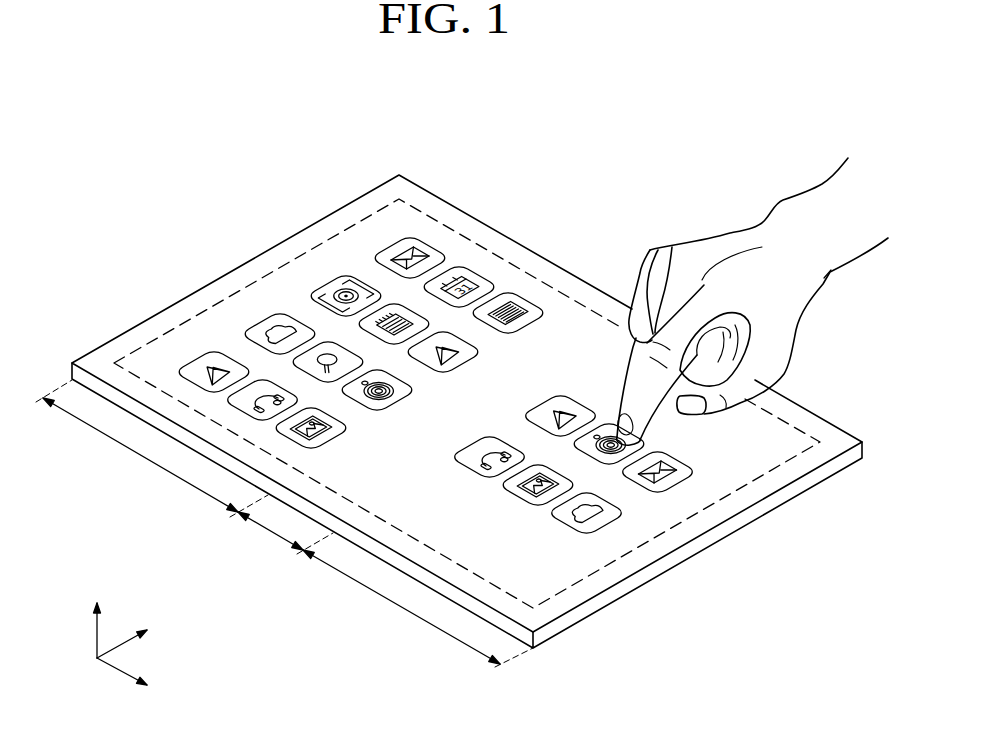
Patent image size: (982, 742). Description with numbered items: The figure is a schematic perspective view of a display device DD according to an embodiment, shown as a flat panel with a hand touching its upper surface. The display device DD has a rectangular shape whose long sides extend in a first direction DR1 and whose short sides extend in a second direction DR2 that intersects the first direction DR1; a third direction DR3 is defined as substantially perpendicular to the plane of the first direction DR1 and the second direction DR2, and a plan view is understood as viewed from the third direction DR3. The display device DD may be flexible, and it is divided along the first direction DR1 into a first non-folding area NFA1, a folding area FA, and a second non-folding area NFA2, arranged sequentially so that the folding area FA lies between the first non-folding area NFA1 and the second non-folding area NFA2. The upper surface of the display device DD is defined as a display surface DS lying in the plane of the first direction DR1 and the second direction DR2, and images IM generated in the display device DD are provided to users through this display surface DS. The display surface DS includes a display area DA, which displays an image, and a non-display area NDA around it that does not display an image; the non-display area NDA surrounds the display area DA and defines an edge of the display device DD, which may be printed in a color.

The display device DD is at (467, 362).
The display surface DS is at (467, 403).
The display area DA is at (568, 333).
The non-display area NDA is at (553, 272).
The image IM is at (327, 288).
The first non-folding area NFA1 is at (137, 446).
The folding area FA is at (281, 526).
The second non-folding area NFA2 is at (418, 608).
The first direction DR1 is at (143, 681).
The second direction DR2 is at (143, 636).
The third direction DR3 is at (98, 618).